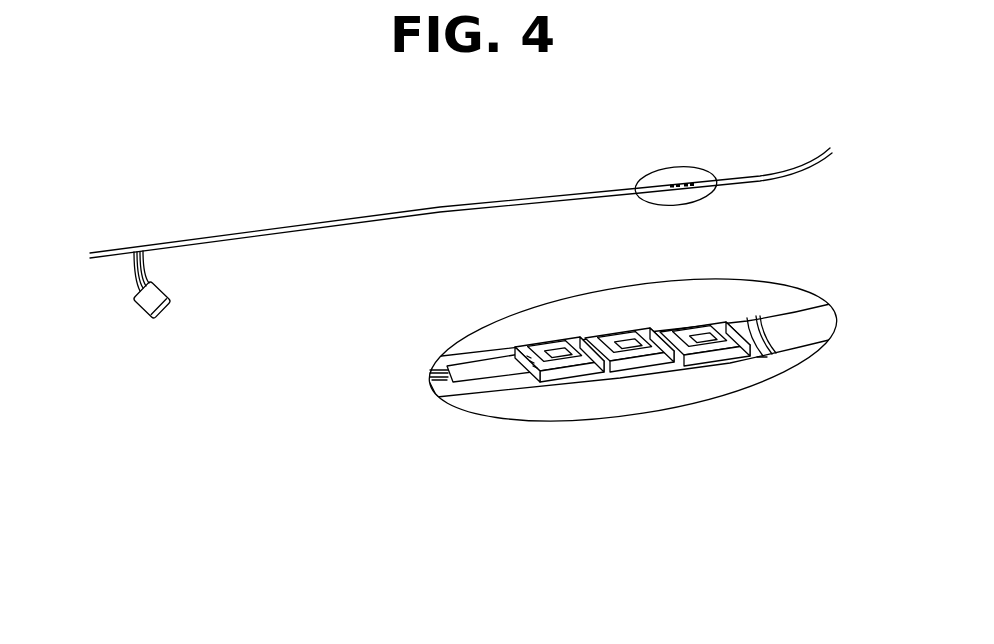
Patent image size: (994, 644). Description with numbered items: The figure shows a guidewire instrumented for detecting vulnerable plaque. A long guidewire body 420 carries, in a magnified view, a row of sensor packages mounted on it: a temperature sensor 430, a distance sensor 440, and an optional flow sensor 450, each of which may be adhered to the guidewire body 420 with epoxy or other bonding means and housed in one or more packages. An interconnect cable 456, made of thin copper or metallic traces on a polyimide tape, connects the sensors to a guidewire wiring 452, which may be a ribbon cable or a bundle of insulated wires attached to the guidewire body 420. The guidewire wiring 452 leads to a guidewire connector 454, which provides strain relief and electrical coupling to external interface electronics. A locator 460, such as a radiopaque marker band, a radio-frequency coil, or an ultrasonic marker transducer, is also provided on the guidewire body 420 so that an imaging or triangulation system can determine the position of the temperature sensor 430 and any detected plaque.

The guidewire body 420 is at (392, 212).
The temperature sensor 430 is at (567, 338).
The distance sensor 440 is at (647, 331).
The flow sensor 450 is at (719, 327).
The guidewire wiring 452 is at (134, 265).
The guidewire connector 454 is at (162, 291).
The interconnect cable 456 is at (498, 376).
The locator 460 is at (695, 182).